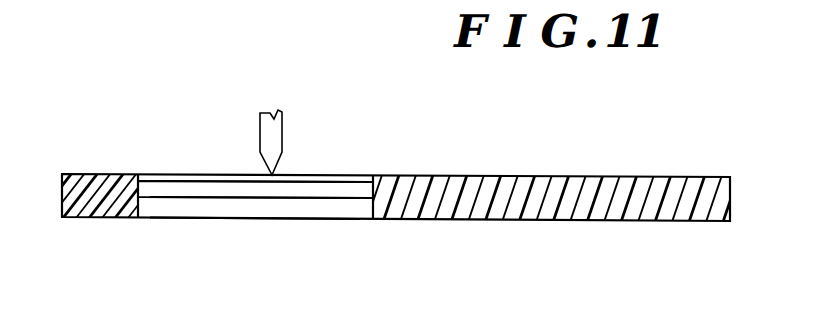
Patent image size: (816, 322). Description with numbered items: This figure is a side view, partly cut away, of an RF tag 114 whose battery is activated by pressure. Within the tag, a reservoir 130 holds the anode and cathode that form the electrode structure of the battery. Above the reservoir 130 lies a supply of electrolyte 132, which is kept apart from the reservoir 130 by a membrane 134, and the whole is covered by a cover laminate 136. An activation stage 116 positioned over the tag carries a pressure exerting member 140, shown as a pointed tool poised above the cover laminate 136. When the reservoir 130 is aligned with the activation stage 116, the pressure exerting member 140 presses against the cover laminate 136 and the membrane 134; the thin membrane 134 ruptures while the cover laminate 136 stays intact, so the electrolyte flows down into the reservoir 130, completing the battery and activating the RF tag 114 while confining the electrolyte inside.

The RF tag 114 is at (537, 176).
The activation stage 116 is at (314, 112).
The reservoir 130 is at (248, 210).
The supply of electrolyte 132 is at (263, 185).
The membrane 134 is at (187, 198).
The cover laminate 136 is at (325, 176).
The pressure exerting member 140 is at (267, 130).